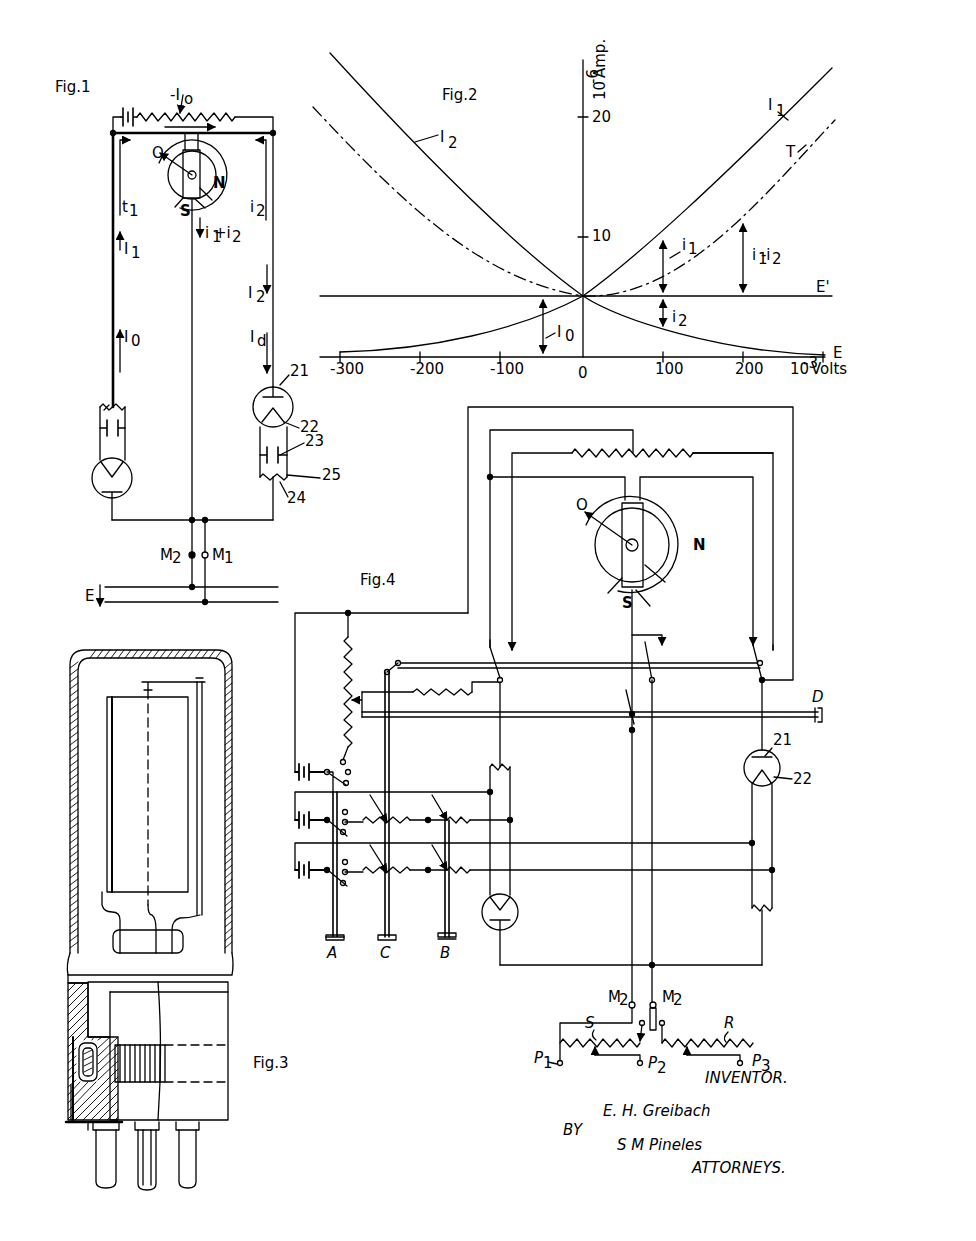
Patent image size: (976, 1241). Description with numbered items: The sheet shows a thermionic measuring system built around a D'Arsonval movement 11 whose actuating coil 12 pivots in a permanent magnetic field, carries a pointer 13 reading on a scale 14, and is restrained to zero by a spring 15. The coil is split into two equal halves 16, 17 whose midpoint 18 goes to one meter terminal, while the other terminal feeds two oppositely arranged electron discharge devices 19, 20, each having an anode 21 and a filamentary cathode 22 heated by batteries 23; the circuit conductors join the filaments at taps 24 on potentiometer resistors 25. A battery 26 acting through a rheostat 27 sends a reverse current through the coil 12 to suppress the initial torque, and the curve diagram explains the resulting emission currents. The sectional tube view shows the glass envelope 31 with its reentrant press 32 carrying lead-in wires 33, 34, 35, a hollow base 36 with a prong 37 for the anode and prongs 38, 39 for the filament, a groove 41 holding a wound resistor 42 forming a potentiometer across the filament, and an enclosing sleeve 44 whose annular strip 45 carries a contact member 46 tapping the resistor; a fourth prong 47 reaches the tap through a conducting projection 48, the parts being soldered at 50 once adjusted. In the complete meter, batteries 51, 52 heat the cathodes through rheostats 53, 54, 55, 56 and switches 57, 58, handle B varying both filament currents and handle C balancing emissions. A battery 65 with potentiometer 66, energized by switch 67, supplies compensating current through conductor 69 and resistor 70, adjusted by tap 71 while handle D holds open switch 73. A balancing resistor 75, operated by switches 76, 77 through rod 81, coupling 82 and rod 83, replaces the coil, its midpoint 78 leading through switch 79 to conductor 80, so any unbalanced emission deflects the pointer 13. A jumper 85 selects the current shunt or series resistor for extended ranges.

In FIG. 1, the D'Arsonval movement 11 is at (142, 172).
In FIG. 4, the D'Arsonval movement 11 is at (562, 548).
In FIG. 1, the actuating coil 12 is at (202, 172).
In FIG. 4, the actuating coil 12 is at (646, 521).
In FIG. 1, the pointer 13 is at (170, 165).
In FIG. 3, the pointer 13 is at (73, 1085).
In FIG. 4, the pointer 13 is at (612, 520).
In FIG. 1, the scale 14 is at (212, 152).
In FIG. 4, the scale 14 is at (668, 500).
In FIG. 1, the spring 15 is at (187, 180).
In FIG. 4, the spring 15 is at (620, 560).
In FIG. 1, the coil half 16 is at (212, 200).
In FIG. 4, the coil half 16 is at (665, 582).
In FIG. 1, the coil half 17 is at (177, 206).
In FIG. 4, the coil half 17 is at (608, 593).
In FIG. 1, the midpoint of the coil 18 is at (198, 208).
In FIG. 4, the midpoint of the coil 18 is at (650, 606).
In FIG. 1, the electron discharge device 19 is at (292, 402).
In FIG. 4, the electron discharge device 19 is at (780, 762).
In FIG. 1, the electron discharge device 20 is at (124, 470).
In FIG. 4, the electron discharge device 20 is at (518, 918).
In FIG. 1, the anode 21 is at (100, 495).
In FIG. 3, the anode 21 is at (106, 748).
In FIG. 4, the anode 21 is at (498, 928).
In FIG. 1, the cathode 22 is at (102, 470).
In FIG. 3, the cathode 22 is at (146, 810).
In FIG. 4, the cathode 22 is at (514, 904).
In FIG. 1, the battery 23 is at (118, 424).
In FIG. 1, the tap 24 is at (116, 404).
In FIG. 1, the potentiometer resistor 25 is at (100, 405).
In FIG. 1, the battery 26 is at (134, 112).
In FIG. 1, the rheostat 27 is at (204, 108).
In FIG. 3, the glass envelope 31 is at (228, 732).
In FIG. 3, the reentrant press 32 is at (183, 943).
In FIG. 3, the lead-in wire 33 is at (100, 910).
In FIG. 3, the lead-in wire 34 is at (165, 919).
In FIG. 3, the lead-in wire 35 is at (200, 905).
In FIG. 3, the hollow base 36 is at (140, 1018).
In FIG. 3, the prong 37 is at (197, 1150).
In FIG. 3, the prong 38 is at (143, 1160).
In FIG. 3, the prong 39 is at (151, 1150).
In FIG. 3, the groove 41 is at (82, 1052).
In FIG. 3, the resistor 42 is at (150, 1062).
In FIG. 3, the enclosing sleeve 44 is at (68, 1002).
In FIG. 3, the conducting annular strip 45 is at (70, 1112).
In FIG. 3, the contact member 46 is at (83, 1064).
In FIG. 3, the fourth prong member 47 is at (97, 1182).
In FIG. 3, the conducting projection 48 is at (89, 1128).
In FIG. 3, the soldered joint 50 is at (70, 1124).
In FIG. 4, the battery 51 is at (297, 876).
In FIG. 4, the battery 52 is at (297, 824).
In FIG. 4, the rheostat 53 is at (434, 862).
In FIG. 4, the rheostat 54 is at (450, 800).
In FIG. 4, the rheostat 55 is at (376, 862).
In FIG. 4, the rheostat 56 is at (400, 800).
In FIG. 4, the switch 57 is at (336, 879).
In FIG. 4, the switch 58 is at (336, 828).
In FIG. 4, the battery 65 is at (312, 770).
In FIG. 4, the potentiometer 66 is at (345, 648).
In FIG. 4, the switch 67 is at (350, 780).
In FIG. 4, the conductor 69 is at (468, 520).
In FIG. 4, the resistor 70 is at (430, 692).
In FIG. 4, the tap 71 is at (362, 708).
In FIG. 4, the switch 73 is at (630, 732).
In FIG. 4, the balancing resistor 75 is at (718, 440).
In FIG. 4, the switch 76 is at (756, 676).
In FIG. 4, the switch 77 is at (504, 680).
In FIG. 4, the midpoint 78 is at (636, 452).
In FIG. 4, the switch 79 is at (657, 681).
In FIG. 4, the conductor 80 is at (696, 965).
In FIG. 4, the rod 81 is at (385, 673).
In FIG. 4, the coupling 82 is at (398, 660).
In FIG. 4, the rod 83 is at (426, 663).
In FIG. 4, the jumper 85 is at (660, 1014).